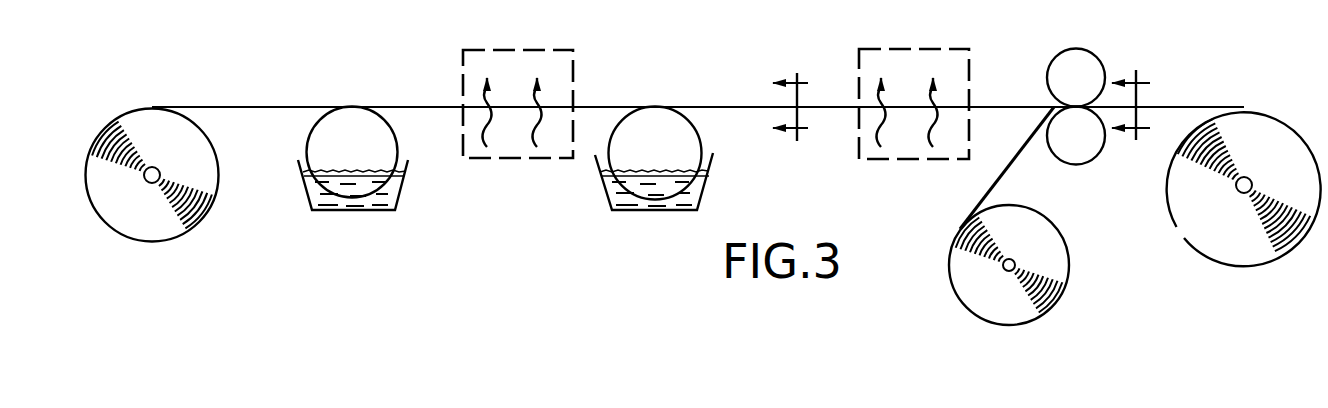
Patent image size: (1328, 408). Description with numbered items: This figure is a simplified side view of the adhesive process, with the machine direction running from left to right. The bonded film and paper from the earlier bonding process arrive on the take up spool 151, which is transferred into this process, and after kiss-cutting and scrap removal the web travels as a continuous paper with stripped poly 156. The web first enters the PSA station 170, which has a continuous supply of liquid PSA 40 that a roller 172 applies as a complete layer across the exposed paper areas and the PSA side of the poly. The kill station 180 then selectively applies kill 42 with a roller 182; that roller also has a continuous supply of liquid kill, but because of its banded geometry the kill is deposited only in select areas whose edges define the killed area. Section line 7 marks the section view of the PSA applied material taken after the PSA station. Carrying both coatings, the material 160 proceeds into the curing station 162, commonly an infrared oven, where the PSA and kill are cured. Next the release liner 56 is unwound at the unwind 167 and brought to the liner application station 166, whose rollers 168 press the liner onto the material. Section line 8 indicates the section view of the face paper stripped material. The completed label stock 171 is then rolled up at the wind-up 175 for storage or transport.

The take up spool 151 is at (152, 106).
The paper with stripped poly 156 is at (228, 104).
The PSA station 170 is at (362, 144).
The roller 172 is at (392, 122).
The PSA 40 is at (308, 193).
The curing station 162 is at (470, 173).
The kill station 180 is at (669, 148).
The roller 182 is at (693, 121).
The kill 42 is at (627, 197).
The section line 7- 7 is at (790, 107).
The material 160 is at (828, 98).
The liner application station 166 is at (1074, 101).
The rollers 168 is at (1050, 60).
The section line 8- 8 is at (1131, 105).
The release liner 56 is at (1013, 172).
The unwinding of release liner 167 is at (957, 306).
The label stock 171 is at (1172, 106).
The roll up of label stock 175 is at (1207, 259).